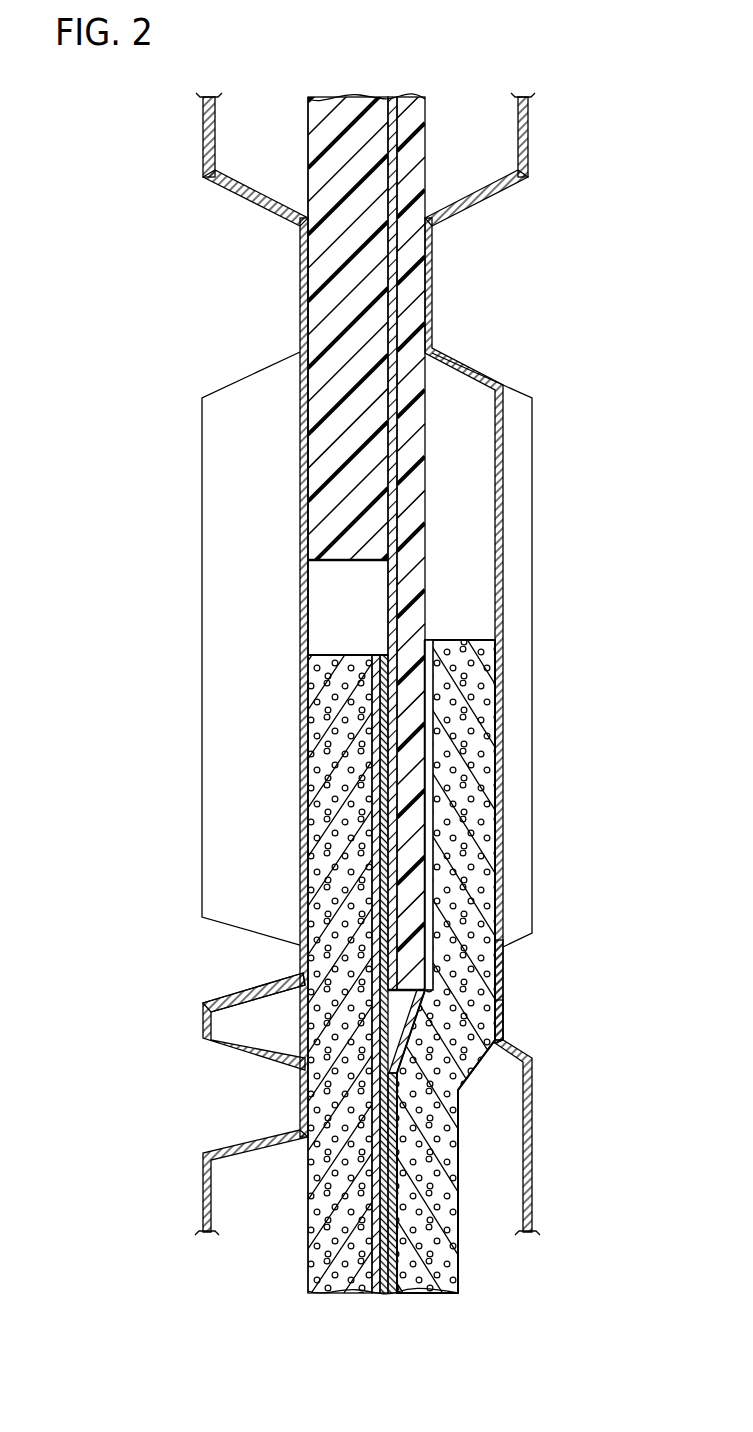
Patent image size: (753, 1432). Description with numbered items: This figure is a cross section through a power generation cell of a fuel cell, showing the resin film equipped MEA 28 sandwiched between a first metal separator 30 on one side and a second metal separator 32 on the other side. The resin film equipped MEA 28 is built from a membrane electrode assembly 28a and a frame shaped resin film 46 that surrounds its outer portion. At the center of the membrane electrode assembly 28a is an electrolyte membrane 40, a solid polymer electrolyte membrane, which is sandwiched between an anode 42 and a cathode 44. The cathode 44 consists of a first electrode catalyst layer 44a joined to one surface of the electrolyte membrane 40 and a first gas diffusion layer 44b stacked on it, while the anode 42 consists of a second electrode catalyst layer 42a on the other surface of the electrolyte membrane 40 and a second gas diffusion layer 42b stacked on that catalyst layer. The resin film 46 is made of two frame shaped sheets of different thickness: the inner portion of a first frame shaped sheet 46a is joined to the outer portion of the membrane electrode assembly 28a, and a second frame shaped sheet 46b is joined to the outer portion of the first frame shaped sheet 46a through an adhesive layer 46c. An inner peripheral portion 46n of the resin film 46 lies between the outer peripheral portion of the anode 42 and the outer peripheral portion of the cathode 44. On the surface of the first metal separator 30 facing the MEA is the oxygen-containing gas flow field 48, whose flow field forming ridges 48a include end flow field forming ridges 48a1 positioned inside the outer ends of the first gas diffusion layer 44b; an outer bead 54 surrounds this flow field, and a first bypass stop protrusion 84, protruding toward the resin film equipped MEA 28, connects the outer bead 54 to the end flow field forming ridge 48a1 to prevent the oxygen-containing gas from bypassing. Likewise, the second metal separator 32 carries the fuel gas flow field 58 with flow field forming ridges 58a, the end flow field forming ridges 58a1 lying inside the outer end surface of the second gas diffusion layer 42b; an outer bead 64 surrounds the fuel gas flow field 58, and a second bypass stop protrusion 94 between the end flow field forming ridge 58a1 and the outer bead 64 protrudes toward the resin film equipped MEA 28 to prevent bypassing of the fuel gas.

The resin film equipped MEA 28 is at (345, 80).
The membrane electrode assembly 28a is at (477, 1089).
The first metal separator 30 is at (203, 139).
The second metal separator 32 is at (529, 125).
The outer bead 54 is at (252, 192).
The outer bead 64 is at (475, 192).
The resin film 46 is at (421, 657).
The first frame shaped sheet 46a is at (413, 484).
The second frame shaped sheet 46b is at (327, 478).
The adhesive layer 46c is at (395, 525).
The inner peripheral portion 46n is at (413, 846).
The second bypass stop protrusion 94 is at (494, 577).
The first bypass stop protrusion 84 is at (308, 616).
The cathode 44 is at (242, 980).
The first electrode catalyst layer 44a is at (376, 722).
The first gas diffusion layer 44b is at (328, 750).
The anode 42 is at (515, 942).
The second electrode catalyst layer 42a is at (434, 744).
The second gas diffusion layer 42b is at (473, 785).
The flow field forming ridge 58a is at (577, 990).
The end flow field forming ridge 58a1 is at (500, 983).
The flow field forming ridge 48a is at (235, 1045).
The end flow field forming ridge 48a1 is at (254, 992).
The oxygen-containing gas flow field 48 is at (233, 1185).
The fuel gas flow field 58 is at (503, 1183).
The electrolyte membrane 40 is at (388, 1258).